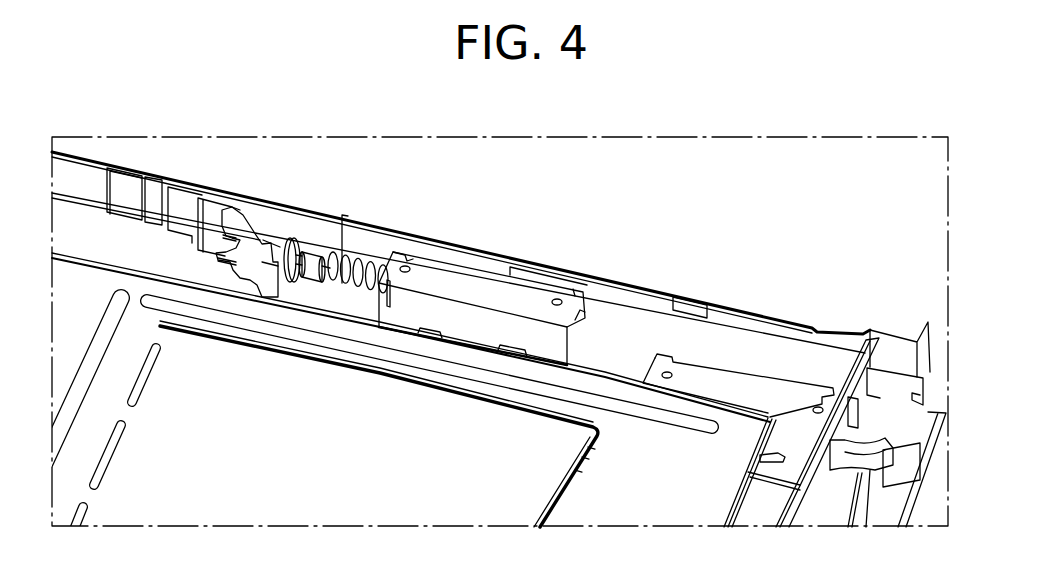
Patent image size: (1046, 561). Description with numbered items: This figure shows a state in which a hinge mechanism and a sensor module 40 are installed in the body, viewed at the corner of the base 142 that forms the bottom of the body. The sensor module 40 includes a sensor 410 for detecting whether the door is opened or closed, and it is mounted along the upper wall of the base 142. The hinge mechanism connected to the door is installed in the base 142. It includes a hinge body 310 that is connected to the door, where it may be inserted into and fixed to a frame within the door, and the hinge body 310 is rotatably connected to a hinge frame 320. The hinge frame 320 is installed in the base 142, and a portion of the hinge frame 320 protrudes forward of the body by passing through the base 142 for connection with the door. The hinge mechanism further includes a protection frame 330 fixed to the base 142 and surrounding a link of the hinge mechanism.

The sensor module 40 is at (268, 188).
The base 142 is at (155, 247).
The sensor 410 is at (247, 240).
The protection frame 330 is at (478, 277).
The hinge frame 320 is at (727, 340).
The hinge body 310 is at (900, 373).